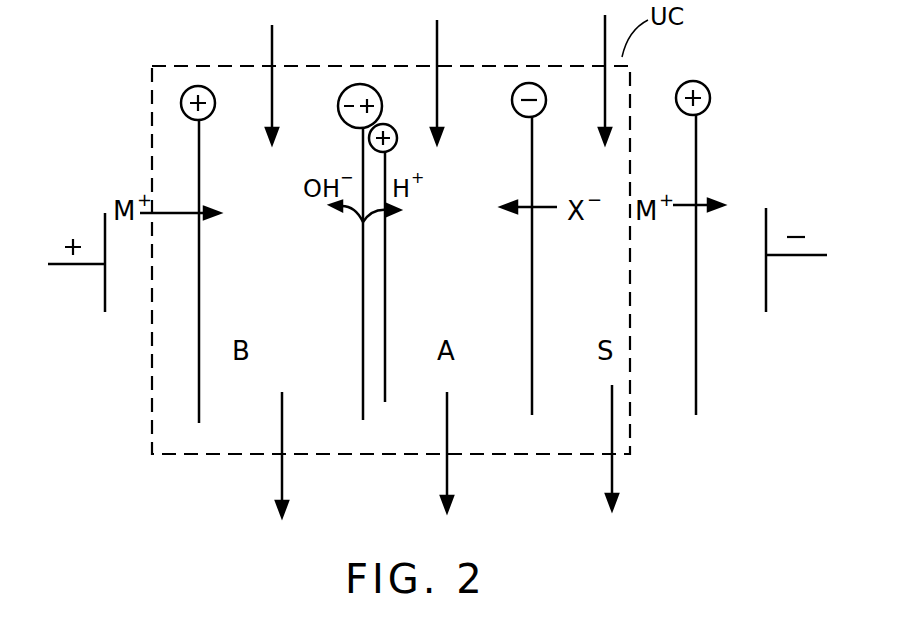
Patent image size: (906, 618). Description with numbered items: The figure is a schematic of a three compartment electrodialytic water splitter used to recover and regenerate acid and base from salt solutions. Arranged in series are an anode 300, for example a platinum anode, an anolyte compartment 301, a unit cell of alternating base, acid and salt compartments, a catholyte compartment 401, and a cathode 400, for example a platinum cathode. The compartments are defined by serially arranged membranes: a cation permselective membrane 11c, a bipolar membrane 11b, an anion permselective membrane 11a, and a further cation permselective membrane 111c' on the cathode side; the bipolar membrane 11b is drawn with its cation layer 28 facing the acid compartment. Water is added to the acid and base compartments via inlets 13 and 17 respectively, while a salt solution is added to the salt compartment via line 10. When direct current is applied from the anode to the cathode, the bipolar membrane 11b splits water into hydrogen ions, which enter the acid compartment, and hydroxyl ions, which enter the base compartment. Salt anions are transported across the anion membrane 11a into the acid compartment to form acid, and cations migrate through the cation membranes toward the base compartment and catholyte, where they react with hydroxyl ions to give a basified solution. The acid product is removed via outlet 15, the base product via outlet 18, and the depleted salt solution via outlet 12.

The line 10 is at (605, 38).
The outlet 12 is at (612, 480).
The inlet 13 is at (437, 43).
The outlet 15 is at (447, 488).
The inlet 17 is at (272, 45).
The outlet 18 is at (282, 488).
The cation-exchange layer of bipolar membrane 28 is at (388, 307).
The anion permselective membrane 11a is at (532, 352).
The bipolar membrane 11b is at (363, 352).
The cation permselective membrane 11c is at (199, 347).
The cation-exchange membrane 111c' is at (680, 248).
The anode 300 is at (100, 230).
The anolyte compartment 301 is at (128, 307).
The cathode 400 is at (766, 240).
The catholyte compartment 401 is at (725, 282).